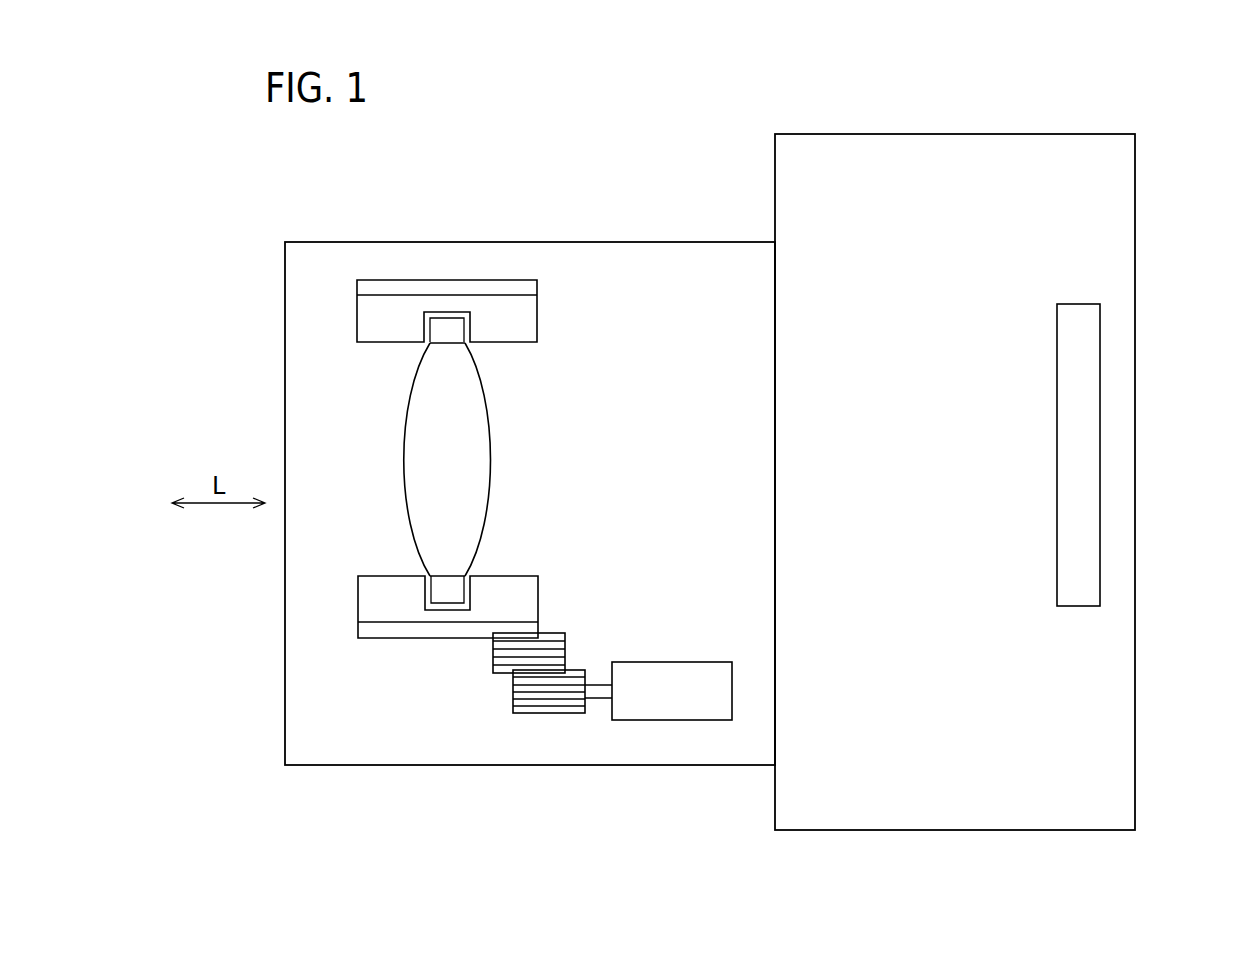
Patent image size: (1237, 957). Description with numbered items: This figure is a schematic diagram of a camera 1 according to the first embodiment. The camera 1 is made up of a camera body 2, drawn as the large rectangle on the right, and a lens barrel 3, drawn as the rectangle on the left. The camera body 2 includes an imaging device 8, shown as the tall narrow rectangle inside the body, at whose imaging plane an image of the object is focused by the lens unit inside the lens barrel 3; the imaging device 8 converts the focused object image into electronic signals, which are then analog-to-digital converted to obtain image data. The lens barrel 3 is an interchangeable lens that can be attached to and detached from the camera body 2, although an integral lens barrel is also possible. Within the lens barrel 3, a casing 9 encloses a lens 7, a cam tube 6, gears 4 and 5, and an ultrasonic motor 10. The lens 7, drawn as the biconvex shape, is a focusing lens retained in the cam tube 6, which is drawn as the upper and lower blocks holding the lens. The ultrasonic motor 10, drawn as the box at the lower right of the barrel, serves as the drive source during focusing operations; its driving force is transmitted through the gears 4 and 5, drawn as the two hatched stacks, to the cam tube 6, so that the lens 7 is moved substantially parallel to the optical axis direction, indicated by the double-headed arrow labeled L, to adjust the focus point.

The camera 1 is at (1186, 153).
The camera body 2 is at (988, 815).
The lens barrel 3 is at (681, 262).
The gear 4 is at (560, 700).
The gear 5 is at (504, 662).
The cam tube 6 is at (390, 625).
The lens 7 is at (479, 458).
The imaging device 8 is at (1065, 442).
The casing 9 is at (557, 242).
The ultrasonic motor 10 is at (664, 677).